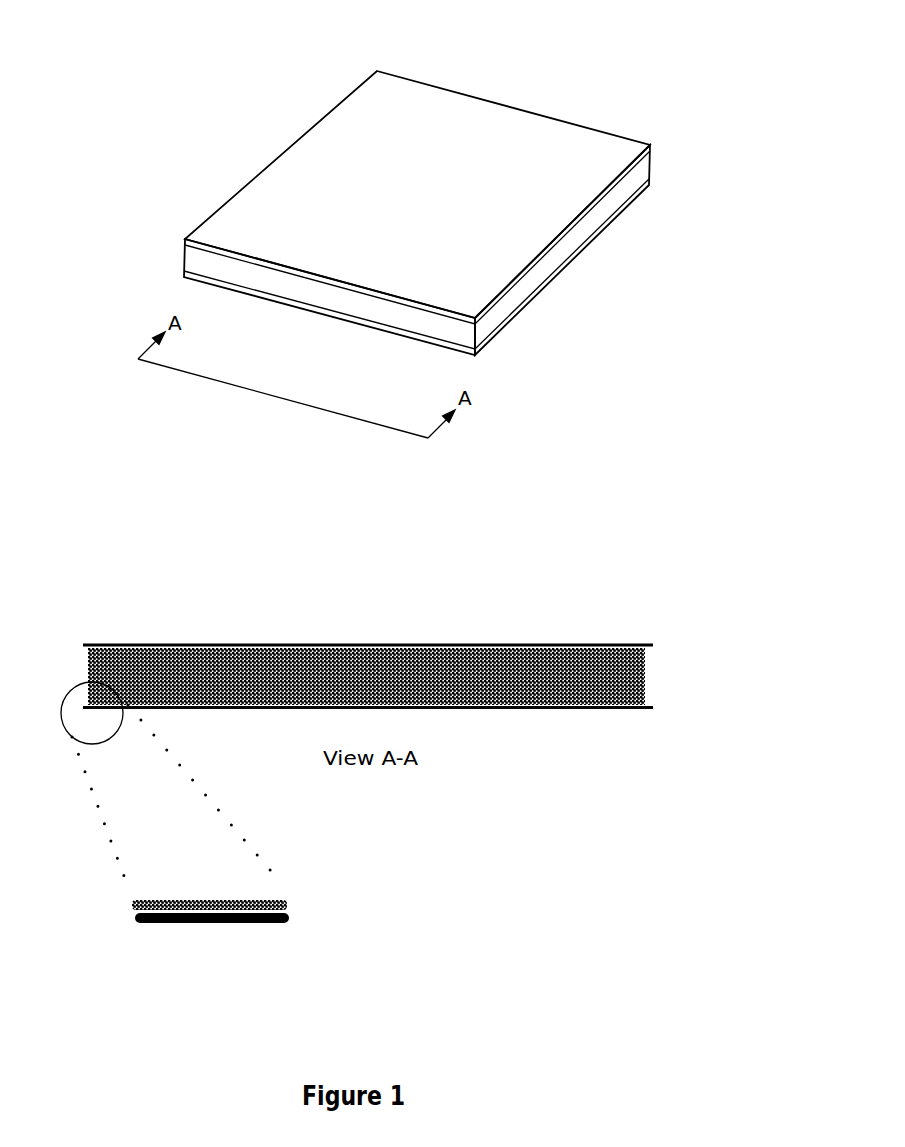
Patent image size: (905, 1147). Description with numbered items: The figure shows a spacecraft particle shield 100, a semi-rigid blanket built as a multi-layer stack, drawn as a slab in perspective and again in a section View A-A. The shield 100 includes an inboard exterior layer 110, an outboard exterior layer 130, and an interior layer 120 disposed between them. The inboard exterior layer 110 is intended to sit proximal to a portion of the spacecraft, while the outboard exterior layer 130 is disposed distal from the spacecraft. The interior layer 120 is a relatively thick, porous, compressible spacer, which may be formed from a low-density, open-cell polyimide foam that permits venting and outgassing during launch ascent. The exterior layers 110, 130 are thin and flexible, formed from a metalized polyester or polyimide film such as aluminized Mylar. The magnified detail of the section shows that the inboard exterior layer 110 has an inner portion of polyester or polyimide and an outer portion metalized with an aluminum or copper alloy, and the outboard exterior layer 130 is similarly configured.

The shield 100 is at (133, 36).
The inboard exterior layer 110 is at (532, 303).
The interior layer 120 is at (652, 161).
The outboard exterior layer 130 is at (557, 142).